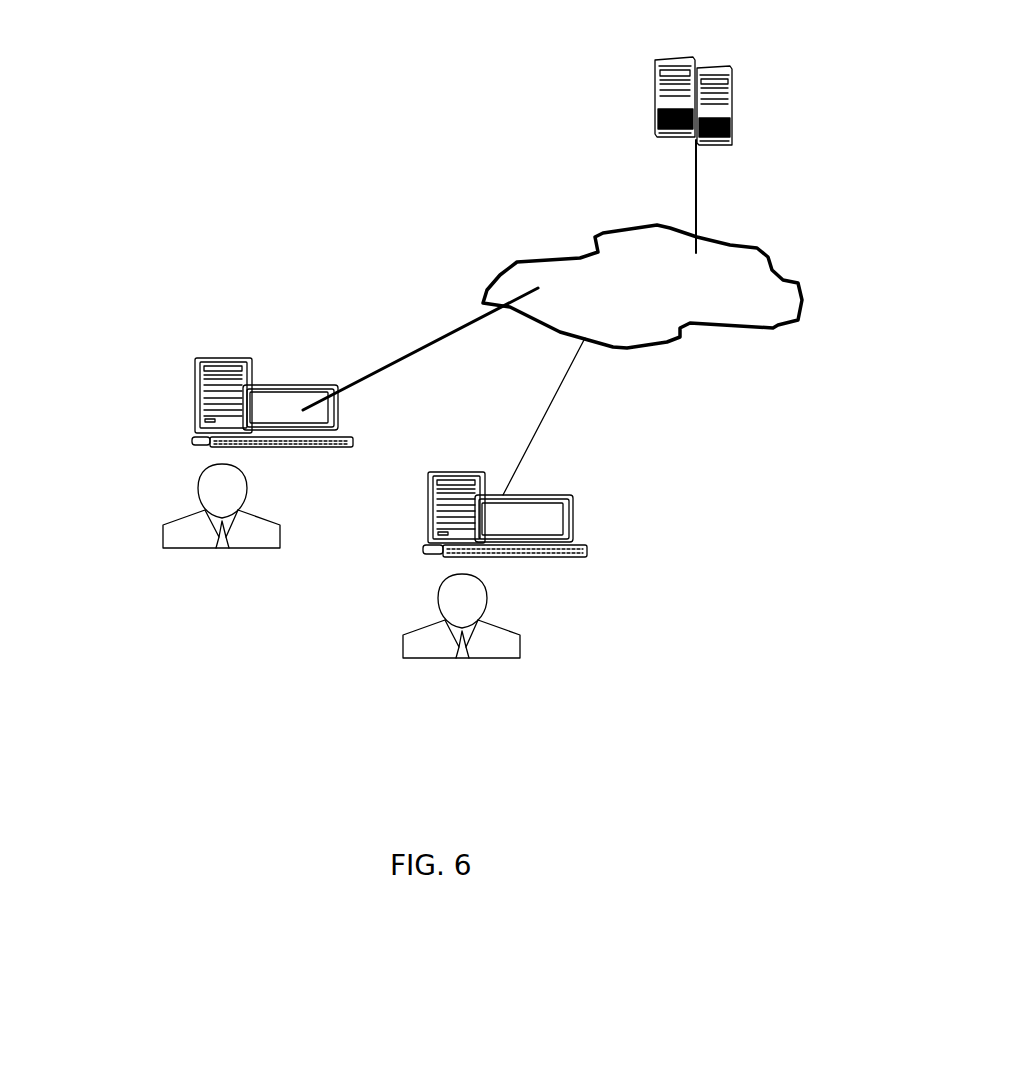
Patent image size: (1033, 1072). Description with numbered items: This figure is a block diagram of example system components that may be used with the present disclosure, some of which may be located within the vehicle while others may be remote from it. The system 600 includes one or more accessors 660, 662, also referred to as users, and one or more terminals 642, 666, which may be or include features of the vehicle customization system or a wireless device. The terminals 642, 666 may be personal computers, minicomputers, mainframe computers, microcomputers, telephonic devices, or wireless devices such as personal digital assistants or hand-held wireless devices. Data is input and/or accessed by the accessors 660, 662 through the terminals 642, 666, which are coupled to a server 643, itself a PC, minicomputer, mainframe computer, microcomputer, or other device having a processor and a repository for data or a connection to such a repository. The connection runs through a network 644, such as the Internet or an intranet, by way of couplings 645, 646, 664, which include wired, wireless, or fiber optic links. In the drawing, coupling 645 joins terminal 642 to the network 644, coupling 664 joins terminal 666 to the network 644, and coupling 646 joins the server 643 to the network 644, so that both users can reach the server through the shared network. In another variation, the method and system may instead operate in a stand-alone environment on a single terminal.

The system 600 is at (273, 72).
The terminal 642 is at (210, 367).
The server 643 is at (722, 72).
The network 644 is at (615, 252).
The coupling 645 is at (420, 347).
The coupling 646 is at (693, 182).
The accessor 660 is at (185, 513).
The accessor 662 is at (520, 640).
The coupling 664 is at (550, 407).
The terminal 666 is at (567, 522).